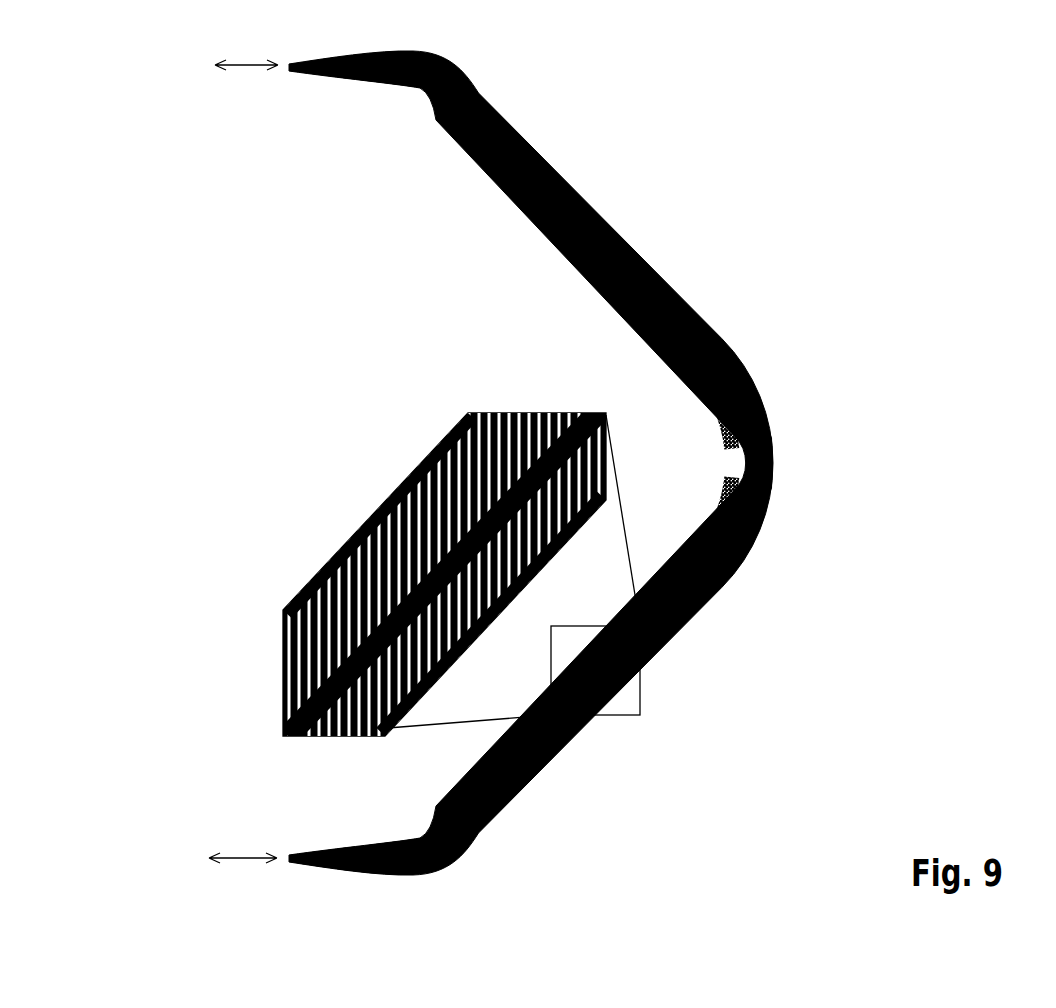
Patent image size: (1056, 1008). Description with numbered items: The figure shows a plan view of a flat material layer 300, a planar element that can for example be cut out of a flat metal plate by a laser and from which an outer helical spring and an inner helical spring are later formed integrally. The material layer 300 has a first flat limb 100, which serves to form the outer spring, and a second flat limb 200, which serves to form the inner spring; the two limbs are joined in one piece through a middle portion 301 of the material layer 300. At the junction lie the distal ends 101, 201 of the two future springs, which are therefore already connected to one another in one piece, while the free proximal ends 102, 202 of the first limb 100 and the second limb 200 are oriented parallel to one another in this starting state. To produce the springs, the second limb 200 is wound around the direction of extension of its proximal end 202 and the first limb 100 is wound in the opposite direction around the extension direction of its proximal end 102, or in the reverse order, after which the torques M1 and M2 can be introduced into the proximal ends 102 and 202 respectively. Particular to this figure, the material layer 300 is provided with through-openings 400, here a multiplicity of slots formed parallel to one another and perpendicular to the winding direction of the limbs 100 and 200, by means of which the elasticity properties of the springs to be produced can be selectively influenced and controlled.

The first limb 100 is at (718, 297).
The distal end 101 is at (767, 427).
The proximal end 102 is at (288, 65).
The second limb 200 is at (674, 645).
The distal end 201 is at (767, 494).
The proximal end 202 is at (285, 843).
The material layer 300 is at (627, 152).
The middle portion 301 is at (767, 461).
The through-openings 400 is at (277, 648).
The torque M1 is at (246, 51).
The torque M2 is at (243, 881).